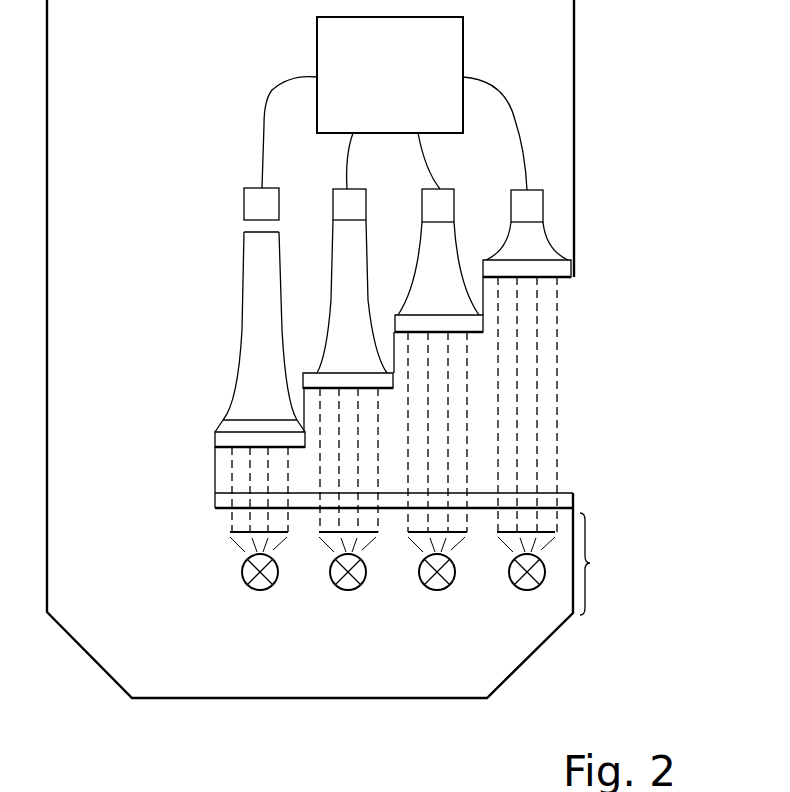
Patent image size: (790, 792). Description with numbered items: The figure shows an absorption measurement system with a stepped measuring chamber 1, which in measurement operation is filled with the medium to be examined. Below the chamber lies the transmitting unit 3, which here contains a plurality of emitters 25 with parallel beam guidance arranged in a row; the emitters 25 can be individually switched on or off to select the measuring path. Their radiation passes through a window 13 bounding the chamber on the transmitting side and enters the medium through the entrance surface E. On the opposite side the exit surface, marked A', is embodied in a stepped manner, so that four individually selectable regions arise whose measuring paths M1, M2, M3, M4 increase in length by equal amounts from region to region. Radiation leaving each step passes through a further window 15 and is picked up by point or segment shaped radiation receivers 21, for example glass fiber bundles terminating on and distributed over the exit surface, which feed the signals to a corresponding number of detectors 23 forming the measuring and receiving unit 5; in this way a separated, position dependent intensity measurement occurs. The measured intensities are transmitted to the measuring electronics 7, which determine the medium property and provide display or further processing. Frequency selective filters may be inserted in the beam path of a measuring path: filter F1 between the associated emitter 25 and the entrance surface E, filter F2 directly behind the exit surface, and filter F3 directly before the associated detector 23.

The measuring chamber 1 is at (590, 408).
The transmitting unit 3 is at (597, 564).
The measuring and receiving unit 5 is at (240, 107).
The measuring electronics 7 is at (399, 92).
The window 13 is at (217, 500).
The further window 15 is at (567, 267).
The radiation receiver 21 is at (250, 362).
The detectors 23 is at (248, 205).
The emitters 25 is at (258, 590).
The measuring path M1 is at (283, 487).
The measuring path M2 is at (373, 453).
The measuring path M3 is at (463, 423).
The measuring path M4 is at (555, 393).
The filter F1 is at (240, 537).
The filter F2 is at (225, 425).
The filter F3 is at (248, 227).
The direction A' is at (637, 314).
The entrance surface E is at (570, 484).